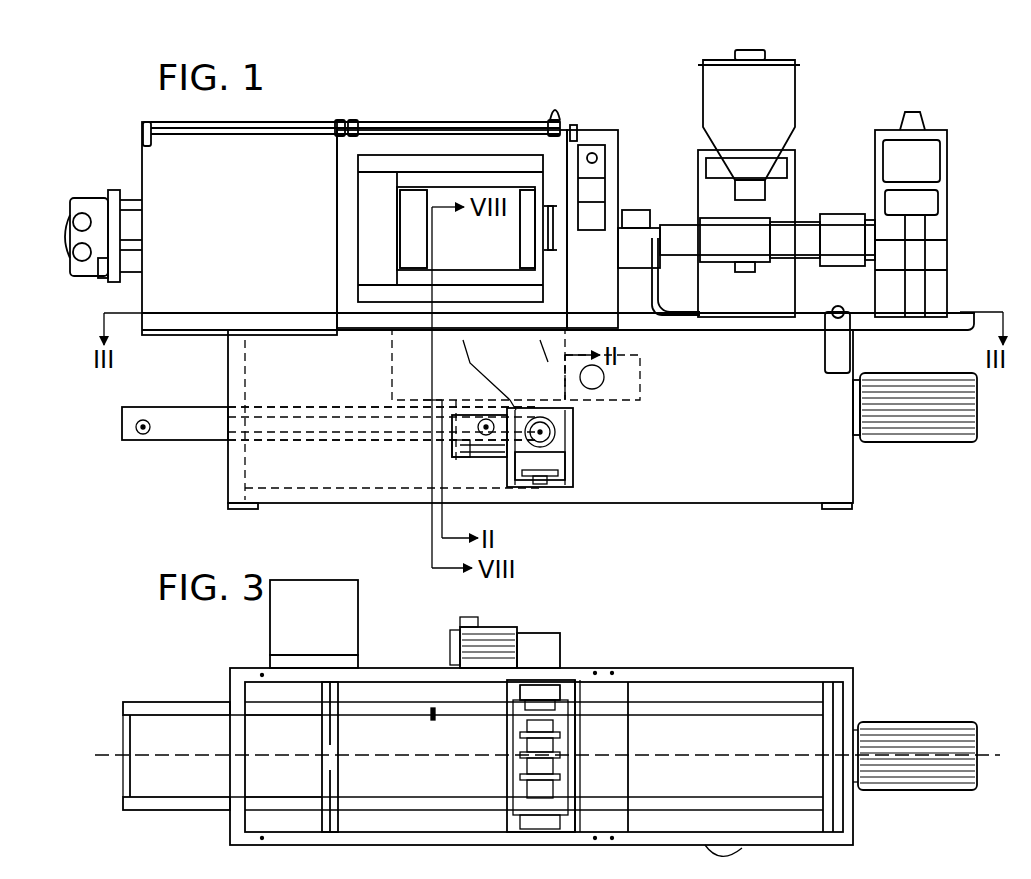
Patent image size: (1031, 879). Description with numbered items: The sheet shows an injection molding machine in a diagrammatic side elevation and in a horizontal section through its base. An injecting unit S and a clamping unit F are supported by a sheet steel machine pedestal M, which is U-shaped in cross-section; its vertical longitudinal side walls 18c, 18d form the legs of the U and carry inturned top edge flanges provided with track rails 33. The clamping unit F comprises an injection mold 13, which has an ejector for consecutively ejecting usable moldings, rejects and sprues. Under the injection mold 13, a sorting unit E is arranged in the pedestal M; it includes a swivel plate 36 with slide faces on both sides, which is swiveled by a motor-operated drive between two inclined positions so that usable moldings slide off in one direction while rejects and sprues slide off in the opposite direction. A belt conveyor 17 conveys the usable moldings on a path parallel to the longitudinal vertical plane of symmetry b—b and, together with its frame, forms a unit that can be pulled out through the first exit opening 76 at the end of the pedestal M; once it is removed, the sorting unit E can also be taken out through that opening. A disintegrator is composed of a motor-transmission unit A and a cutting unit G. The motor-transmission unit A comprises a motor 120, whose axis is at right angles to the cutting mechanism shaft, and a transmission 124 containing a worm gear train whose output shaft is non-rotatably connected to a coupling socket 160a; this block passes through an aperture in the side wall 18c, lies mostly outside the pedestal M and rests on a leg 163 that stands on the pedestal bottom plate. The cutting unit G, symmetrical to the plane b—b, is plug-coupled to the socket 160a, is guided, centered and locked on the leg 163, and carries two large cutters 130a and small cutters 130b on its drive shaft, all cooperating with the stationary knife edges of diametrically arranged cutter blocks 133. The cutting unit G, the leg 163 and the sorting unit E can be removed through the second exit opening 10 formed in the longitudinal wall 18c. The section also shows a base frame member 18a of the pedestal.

In FIG. 1, the injection mold 13 is at (527, 226).
In FIG. 1, the belt conveyor 17 is at (165, 444).
In FIG. 3, the belt conveyor 17 is at (167, 700).
In FIG. 1, the first exit opening 76 is at (224, 401).
In FIG. 3, the first exit opening 76 is at (226, 773).
In FIG. 1, the swivel plate 36 is at (462, 359).
In FIG. 1, the motor 120 is at (475, 455).
In FIG. 3, the motor 120 is at (470, 648).
In FIG. 1, the leg 163 is at (574, 480).
In FIG. 1, the longitudinal side wall 18c is at (770, 472).
In FIG. 3, the longitudinal side wall 18c is at (735, 668).
In FIG. 3, the track rails 33 is at (407, 672).
In FIG. 3, the transmission 124 is at (540, 640).
In FIG. 3, the coupling socket 160a is at (556, 681).
In FIG. 3, the base frame member 18a is at (625, 721).
In FIG. 3, the large cutters 130a is at (576, 735).
In FIG. 3, the small cutters 130b is at (576, 752).
In FIG. 3, the cutter blocks 133 is at (559, 768).
In FIG. 3, the longitudinal side wall 18d is at (737, 856).
In FIG. 3, the second exit opening 10 is at (533, 840).
In FIG. 1, the cutting unit G is at (579, 432).
In FIG. 3, the cutting unit G is at (503, 755).
In FIG. 1, the machine pedestal M is at (803, 508).
In FIG. 3, the machine pedestal M is at (813, 666).
In FIG. 3, the motor-transmission unit A is at (566, 630).
In FIG. 1, the sorting unit E is at (402, 357).
In FIG. 1, the clamping unit F is at (452, 118).
In FIG. 1, the injecting unit S is at (830, 126).
In FIG. 3, the longitudinal vertical plane of symmetry b is at (548, 756).